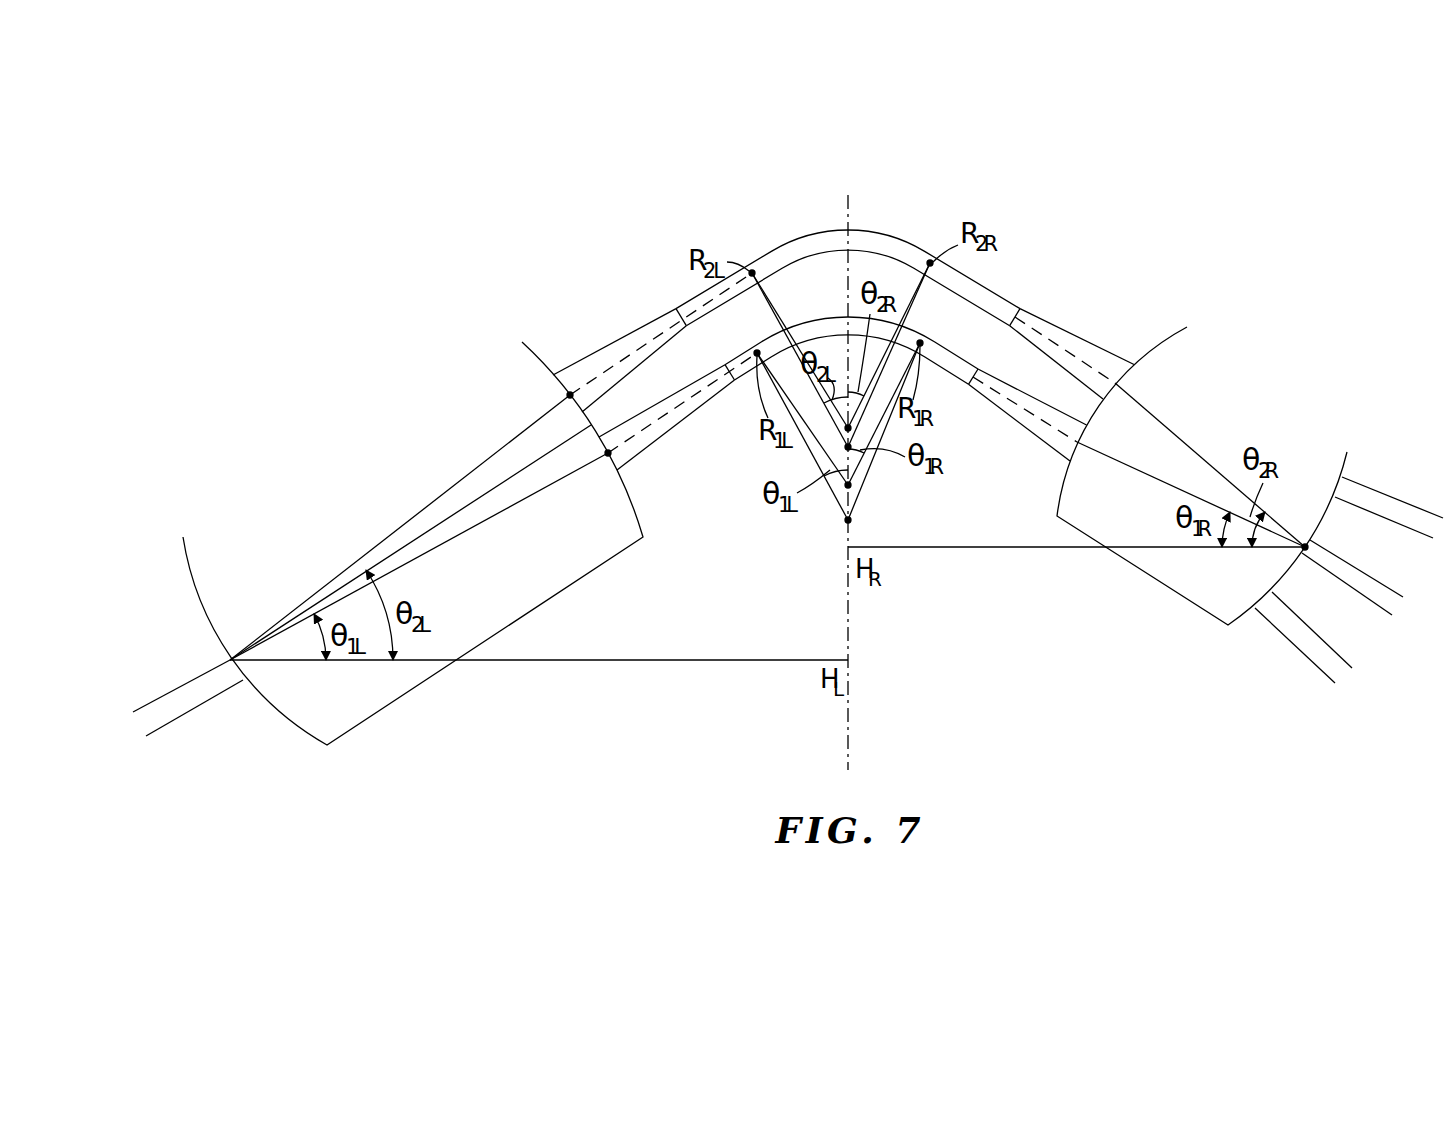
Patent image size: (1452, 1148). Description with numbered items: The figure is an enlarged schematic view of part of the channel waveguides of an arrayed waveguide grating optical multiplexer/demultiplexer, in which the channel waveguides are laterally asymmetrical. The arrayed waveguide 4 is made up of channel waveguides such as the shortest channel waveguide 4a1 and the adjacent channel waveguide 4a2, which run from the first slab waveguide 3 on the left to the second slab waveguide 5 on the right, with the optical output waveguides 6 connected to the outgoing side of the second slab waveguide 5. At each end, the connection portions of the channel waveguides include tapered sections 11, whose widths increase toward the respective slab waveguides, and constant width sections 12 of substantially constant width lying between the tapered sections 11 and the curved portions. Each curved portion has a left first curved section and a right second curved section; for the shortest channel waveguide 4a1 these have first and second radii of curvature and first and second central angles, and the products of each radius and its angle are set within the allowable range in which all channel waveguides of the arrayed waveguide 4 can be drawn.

The first slab waveguide 3 is at (548, 591).
The arrayed waveguide 4 is at (843, 328).
The shortest channel waveguide 4a1 is at (815, 323).
The channel waveguide 4a2 is at (924, 210).
The second slab waveguide 5 is at (1210, 600).
The optical output waveguides 6 is at (1393, 502).
The tapered sections 11 is at (595, 358).
The constant width sections 12 is at (681, 306).